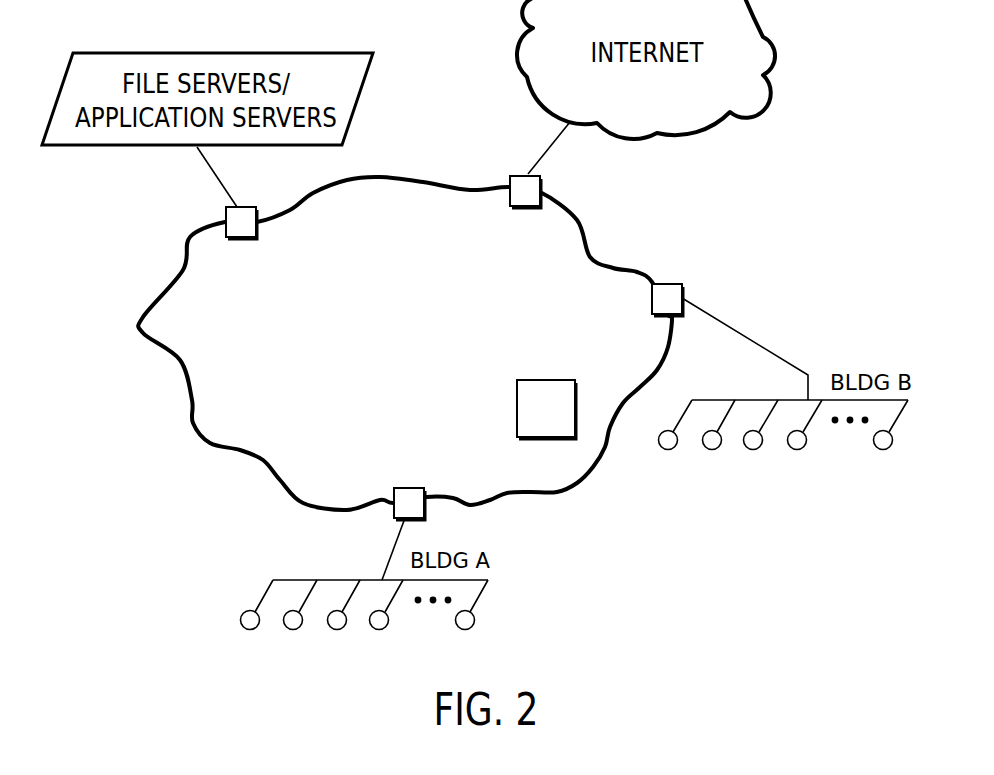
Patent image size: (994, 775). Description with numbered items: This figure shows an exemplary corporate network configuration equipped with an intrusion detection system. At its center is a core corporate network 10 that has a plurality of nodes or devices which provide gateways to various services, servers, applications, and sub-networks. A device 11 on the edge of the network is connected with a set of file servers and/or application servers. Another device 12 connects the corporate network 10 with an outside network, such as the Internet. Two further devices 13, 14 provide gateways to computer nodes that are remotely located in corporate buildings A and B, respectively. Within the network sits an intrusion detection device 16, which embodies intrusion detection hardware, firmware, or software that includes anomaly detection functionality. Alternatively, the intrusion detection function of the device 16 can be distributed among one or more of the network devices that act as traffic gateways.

The core corporate network 10 is at (428, 391).
The device 11 is at (237, 238).
The device 12 is at (523, 207).
The device 13 is at (412, 487).
The device 14 is at (662, 283).
The intrusion detection (ID) device 16 is at (547, 378).